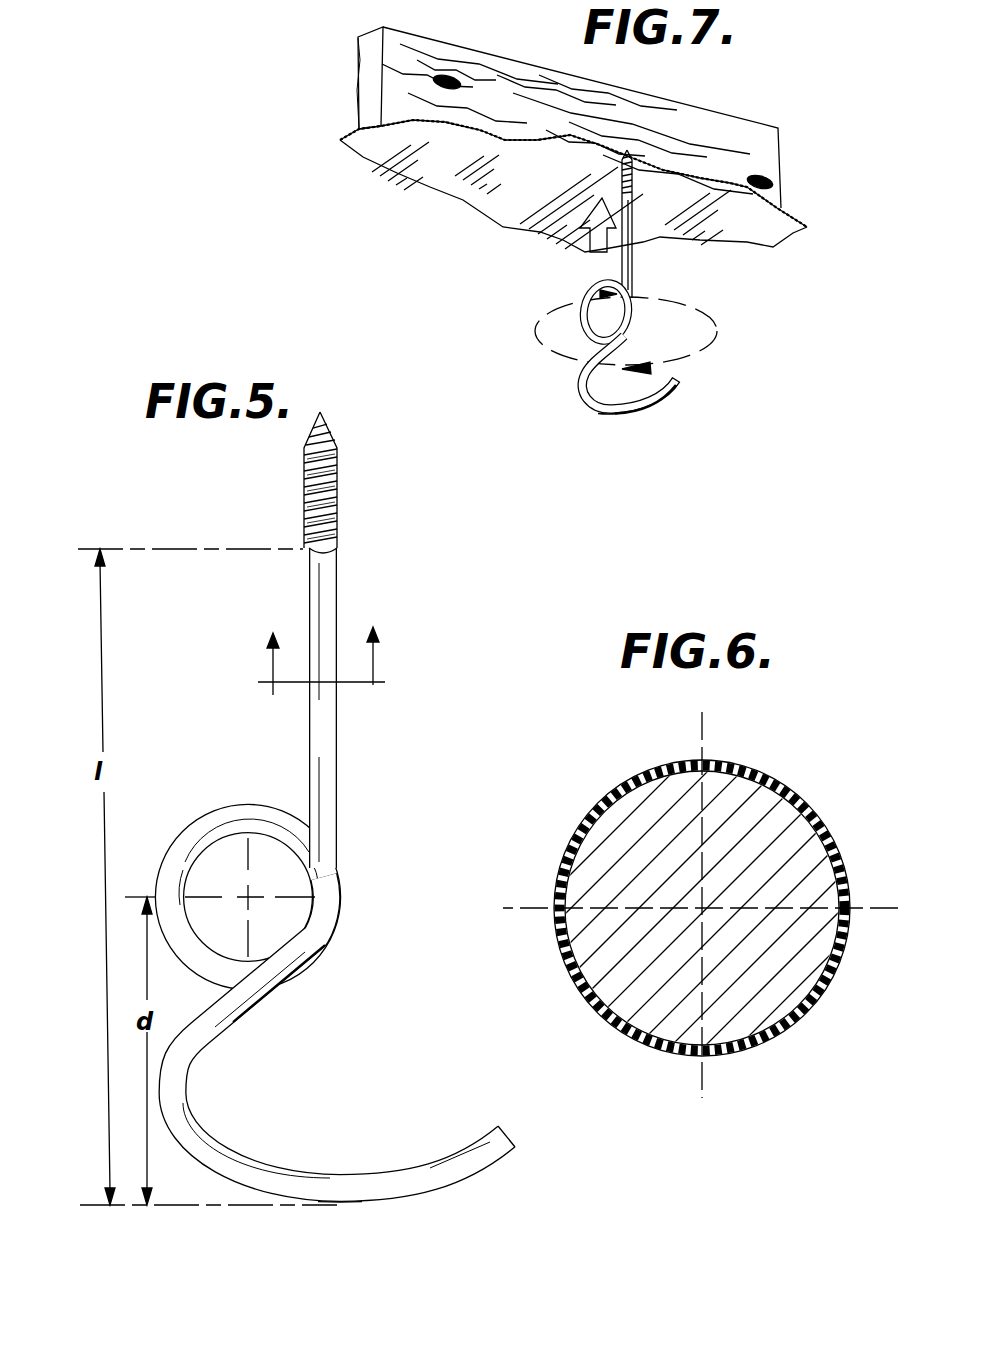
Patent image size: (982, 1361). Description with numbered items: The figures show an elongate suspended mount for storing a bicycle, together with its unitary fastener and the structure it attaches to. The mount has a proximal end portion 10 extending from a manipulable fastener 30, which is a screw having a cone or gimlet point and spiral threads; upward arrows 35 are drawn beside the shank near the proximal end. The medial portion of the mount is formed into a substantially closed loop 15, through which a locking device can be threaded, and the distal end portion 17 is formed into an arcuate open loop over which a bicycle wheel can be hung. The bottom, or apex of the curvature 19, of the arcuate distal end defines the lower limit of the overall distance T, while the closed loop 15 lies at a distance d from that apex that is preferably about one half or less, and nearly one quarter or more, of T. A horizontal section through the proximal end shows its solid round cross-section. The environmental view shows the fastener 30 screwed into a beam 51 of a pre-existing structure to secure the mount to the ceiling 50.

In FIG. 5, the proximal end portion 10 is at (322, 613).
In FIG. 7, the proximal end portion 10 is at (632, 258).
In FIG. 5, the closed loop 15 is at (197, 820).
In FIG. 7, the closed loop 15 is at (583, 318).
In FIG. 5, the distal end portion 17 is at (517, 1140).
In FIG. 7, the distal end portion 17 is at (681, 377).
In FIG. 5, the apex of the curvature 19 is at (335, 1203).
In FIG. 7, the apex of the curvature 19 is at (606, 414).
In FIG. 5, the manipulable fastener 30 is at (338, 462).
In FIG. 7, the manipulable fastener 30 is at (640, 167).
In FIG. 5, the arrows indicating upward force 35 is at (324, 676).
In FIG. 7, the ceiling 50 is at (750, 220).
In FIG. 7, the beam 51 is at (757, 152).